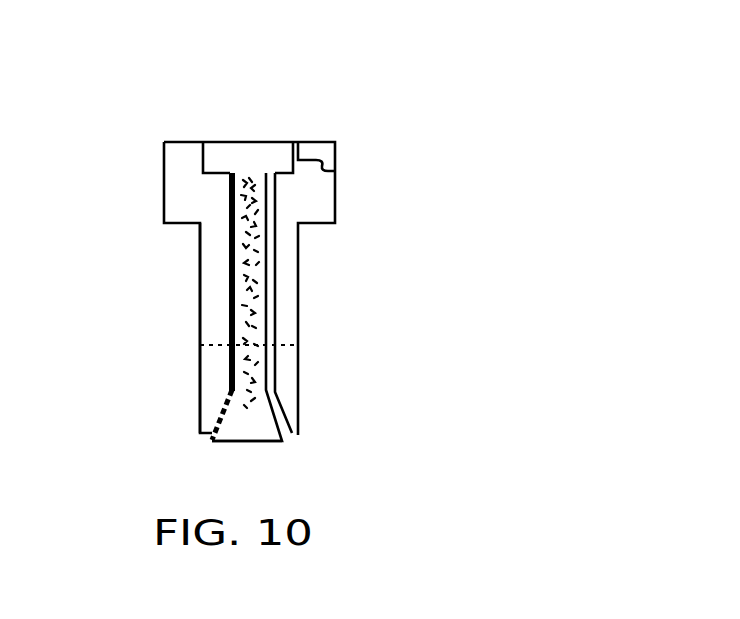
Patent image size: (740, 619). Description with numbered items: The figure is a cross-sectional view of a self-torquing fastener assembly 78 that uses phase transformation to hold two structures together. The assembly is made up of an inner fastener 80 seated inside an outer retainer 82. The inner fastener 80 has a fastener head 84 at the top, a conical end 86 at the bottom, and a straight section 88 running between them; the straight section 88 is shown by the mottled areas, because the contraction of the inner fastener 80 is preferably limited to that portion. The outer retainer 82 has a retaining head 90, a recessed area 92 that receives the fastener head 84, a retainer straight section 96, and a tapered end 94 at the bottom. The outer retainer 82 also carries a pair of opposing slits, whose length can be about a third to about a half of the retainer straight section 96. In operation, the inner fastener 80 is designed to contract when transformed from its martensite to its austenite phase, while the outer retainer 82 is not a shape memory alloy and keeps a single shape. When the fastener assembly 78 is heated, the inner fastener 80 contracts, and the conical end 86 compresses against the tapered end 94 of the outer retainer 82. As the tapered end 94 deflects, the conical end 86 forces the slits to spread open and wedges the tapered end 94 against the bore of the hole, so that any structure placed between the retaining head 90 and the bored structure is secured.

The self-torquing fastener assembly 78 is at (341, 72).
The inner fastener 80 is at (243, 138).
The outer retainer 82 is at (197, 280).
The fastener head 84 is at (272, 140).
The conical end 86 is at (247, 440).
The straight section 88 is at (258, 317).
The retaining head 90 is at (316, 203).
The recessed area 92 is at (335, 171).
The tapered end 94 is at (298, 435).
The retainer straight section 96 is at (300, 342).